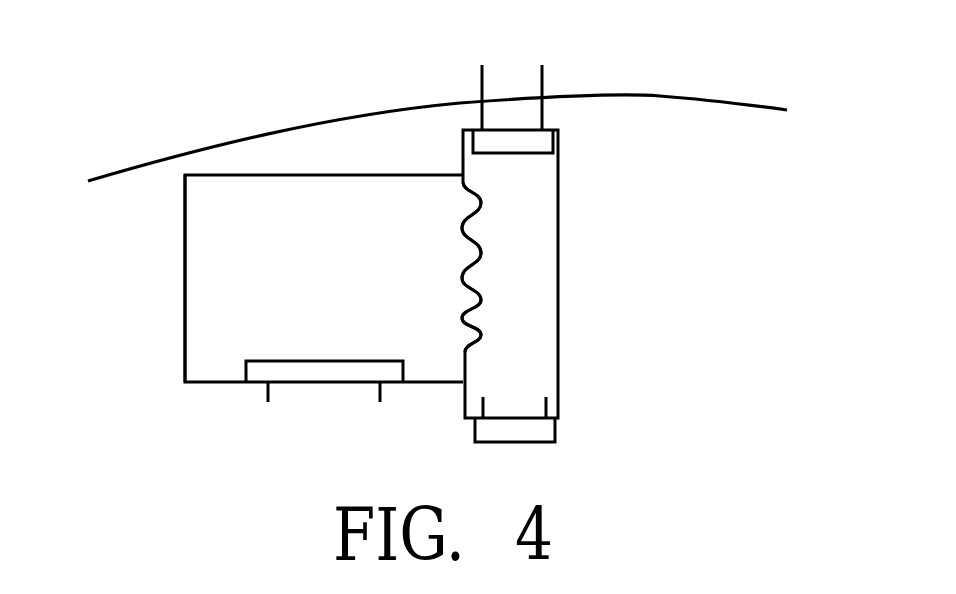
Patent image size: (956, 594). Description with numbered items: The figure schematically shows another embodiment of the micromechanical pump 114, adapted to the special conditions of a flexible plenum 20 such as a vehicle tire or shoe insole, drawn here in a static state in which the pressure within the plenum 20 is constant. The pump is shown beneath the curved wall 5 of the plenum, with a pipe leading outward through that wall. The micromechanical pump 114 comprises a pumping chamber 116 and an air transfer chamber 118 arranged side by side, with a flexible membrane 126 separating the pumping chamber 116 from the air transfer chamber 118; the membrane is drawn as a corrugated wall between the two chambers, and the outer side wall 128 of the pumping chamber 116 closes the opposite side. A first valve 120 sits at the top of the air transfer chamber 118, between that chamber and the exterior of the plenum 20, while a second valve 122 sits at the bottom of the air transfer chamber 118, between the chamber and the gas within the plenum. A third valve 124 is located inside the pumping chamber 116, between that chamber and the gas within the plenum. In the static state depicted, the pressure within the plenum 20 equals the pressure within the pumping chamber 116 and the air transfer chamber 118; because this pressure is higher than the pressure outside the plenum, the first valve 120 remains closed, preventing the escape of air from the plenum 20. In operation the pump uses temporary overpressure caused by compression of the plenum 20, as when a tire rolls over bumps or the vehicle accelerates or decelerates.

The vehicle body panel 5 is at (722, 100).
The flexible plenum 20 is at (603, 99).
The micromechanical pump 114 is at (645, 255).
The pumping chamber 116 is at (210, 217).
The air transfer chamber 118 is at (538, 190).
The first valve 120 is at (538, 142).
The second valve 122 is at (535, 435).
The third valve 124 is at (267, 373).
The flexible membrane 126 is at (467, 246).
The side wall 128 is at (185, 280).